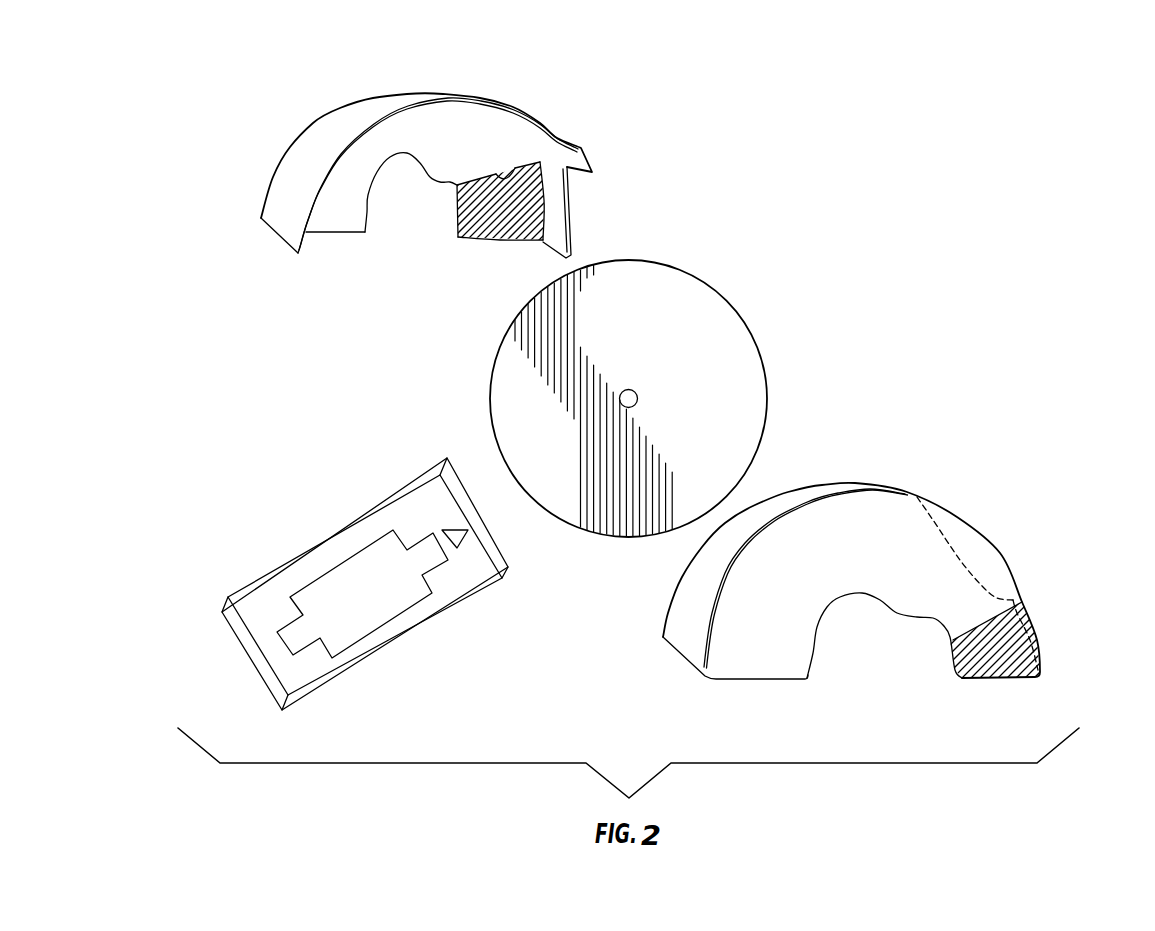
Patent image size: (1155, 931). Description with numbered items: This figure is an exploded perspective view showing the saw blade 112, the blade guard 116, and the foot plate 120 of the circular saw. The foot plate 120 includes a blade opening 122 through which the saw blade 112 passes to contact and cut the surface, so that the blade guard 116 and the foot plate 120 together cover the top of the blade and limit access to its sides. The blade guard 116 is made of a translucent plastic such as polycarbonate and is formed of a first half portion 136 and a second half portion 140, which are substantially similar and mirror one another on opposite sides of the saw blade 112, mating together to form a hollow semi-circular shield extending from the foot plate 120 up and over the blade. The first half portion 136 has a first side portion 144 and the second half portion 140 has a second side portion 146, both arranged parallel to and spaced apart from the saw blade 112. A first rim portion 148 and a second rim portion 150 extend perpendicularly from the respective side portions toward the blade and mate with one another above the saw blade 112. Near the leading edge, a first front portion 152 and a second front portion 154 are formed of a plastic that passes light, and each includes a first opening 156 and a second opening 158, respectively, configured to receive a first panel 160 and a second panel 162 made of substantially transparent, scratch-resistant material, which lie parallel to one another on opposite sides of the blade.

The saw blade 112 is at (727, 367).
The blade guard 116 is at (598, 162).
The foot plate 120 is at (257, 603).
The blade opening 122 is at (343, 563).
The first half portion 136 is at (443, 115).
The second half portion 140 is at (926, 577).
The first side portion 144 is at (343, 217).
The second side portion 146 is at (797, 638).
The first rim portion 148 is at (287, 193).
The second rim portion 150 is at (685, 615).
The first front portion 152 is at (498, 135).
The second front portion 154 is at (1003, 586).
The first opening 156 is at (513, 164).
The second opening 158 is at (984, 624).
The first panel 160 is at (487, 230).
The second panel 162 is at (983, 652).